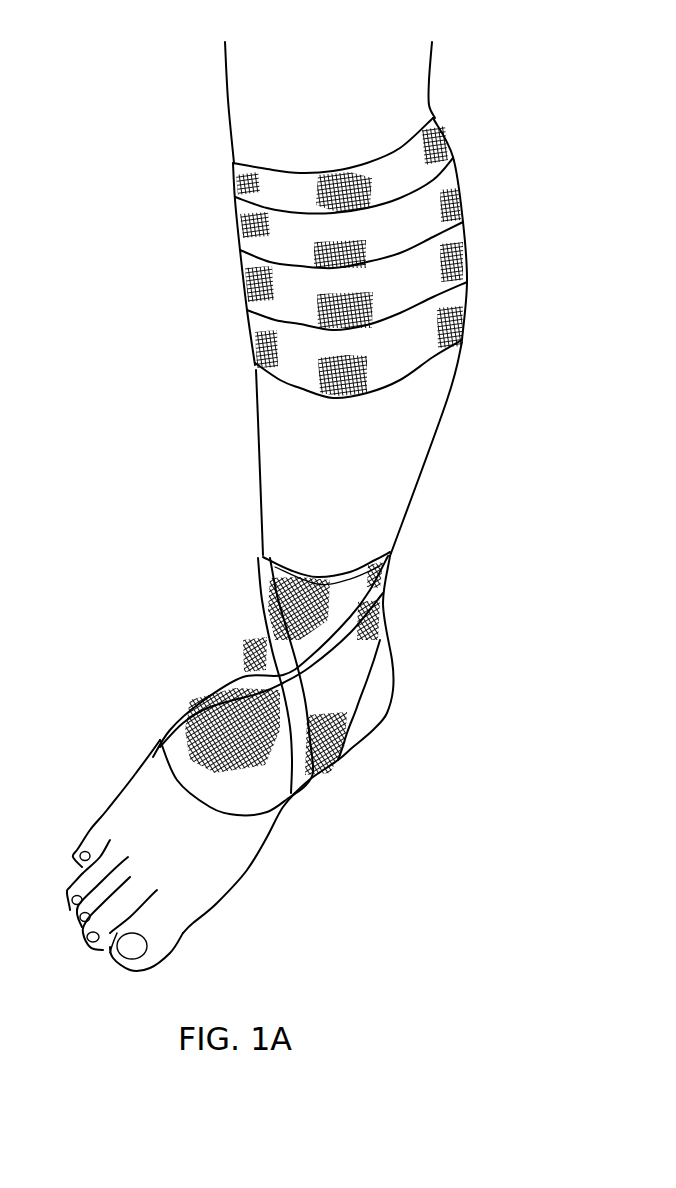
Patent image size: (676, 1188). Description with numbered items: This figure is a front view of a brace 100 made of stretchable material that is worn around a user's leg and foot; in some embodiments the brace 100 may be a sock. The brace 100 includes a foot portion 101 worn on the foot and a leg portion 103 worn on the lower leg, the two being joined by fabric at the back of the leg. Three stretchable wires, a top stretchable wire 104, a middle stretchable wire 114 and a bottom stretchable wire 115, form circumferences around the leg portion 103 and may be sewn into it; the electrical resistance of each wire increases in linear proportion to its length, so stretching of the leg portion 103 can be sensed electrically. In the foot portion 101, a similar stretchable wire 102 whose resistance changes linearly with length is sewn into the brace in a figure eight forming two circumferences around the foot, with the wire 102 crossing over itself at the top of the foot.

The brace 100 is at (130, 98).
The foot portion 101 is at (237, 635).
The stretchable wire 102 is at (387, 585).
The leg portion 103 is at (228, 217).
The top stretchable wire 104 is at (453, 156).
The middle stretchable wire 114 is at (464, 222).
The bottom stretchable wire 115 is at (469, 287).